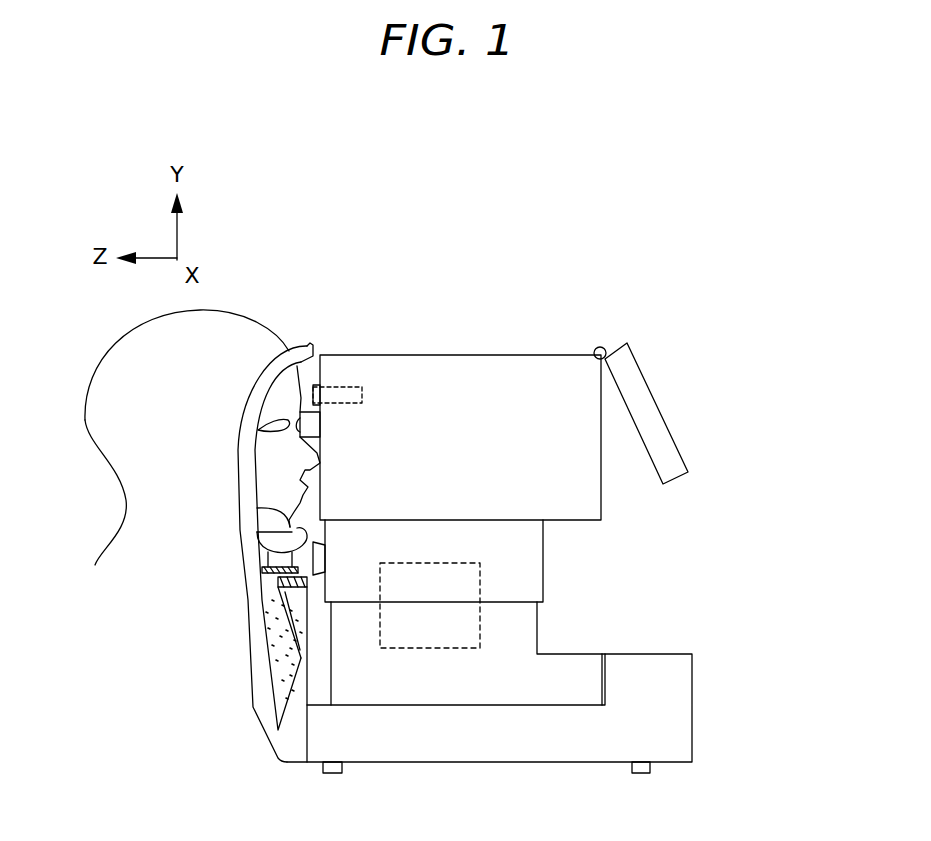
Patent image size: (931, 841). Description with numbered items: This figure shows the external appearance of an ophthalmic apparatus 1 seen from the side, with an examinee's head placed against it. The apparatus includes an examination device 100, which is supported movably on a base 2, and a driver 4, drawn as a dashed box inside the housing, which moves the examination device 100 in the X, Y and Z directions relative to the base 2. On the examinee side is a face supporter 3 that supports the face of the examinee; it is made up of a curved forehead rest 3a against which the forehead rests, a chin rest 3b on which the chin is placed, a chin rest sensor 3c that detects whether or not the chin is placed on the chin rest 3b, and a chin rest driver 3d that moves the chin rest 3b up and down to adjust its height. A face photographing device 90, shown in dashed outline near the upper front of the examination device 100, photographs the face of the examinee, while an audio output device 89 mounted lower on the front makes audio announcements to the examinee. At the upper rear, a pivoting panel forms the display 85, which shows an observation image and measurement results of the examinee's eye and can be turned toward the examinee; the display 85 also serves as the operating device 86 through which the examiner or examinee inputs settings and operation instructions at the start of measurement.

The ophthalmic apparatus 1 is at (565, 257).
The base 2 is at (680, 717).
The face supporter 3 is at (210, 749).
The forehead rest 3a is at (308, 343).
The chin rest 3b is at (257, 508).
The chin rest sensor 3c is at (264, 616).
The chin rest driver 3d is at (266, 650).
The driver 4 is at (460, 582).
The display 85 is at (637, 383).
The operating device 86 is at (678, 381).
The audio output device 89 is at (318, 559).
The face photographing device 90 is at (352, 386).
The examination device 100 is at (452, 355).